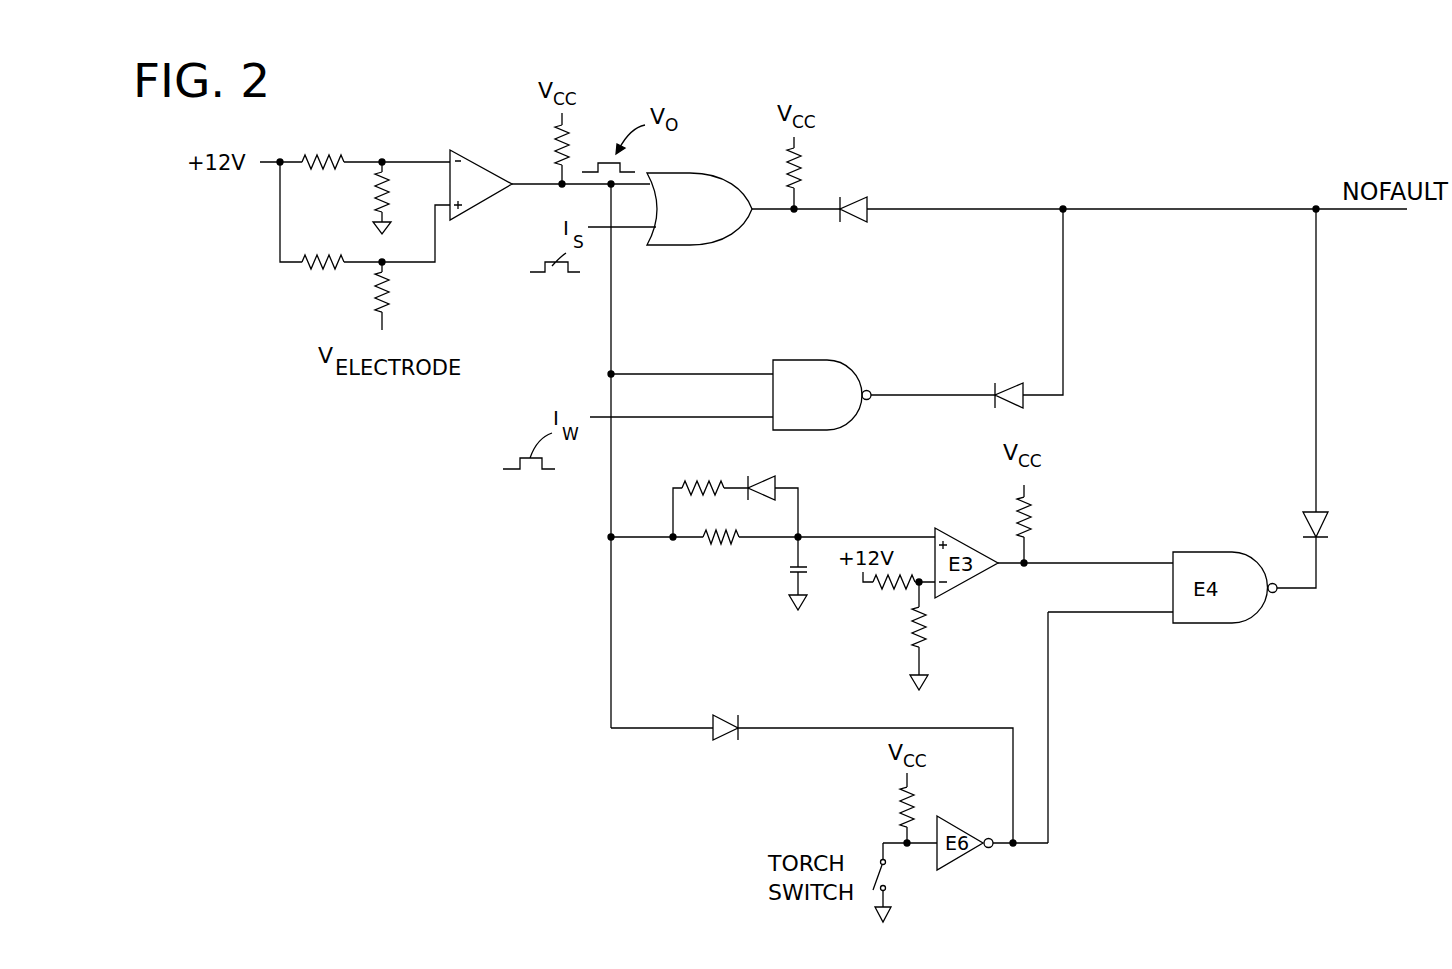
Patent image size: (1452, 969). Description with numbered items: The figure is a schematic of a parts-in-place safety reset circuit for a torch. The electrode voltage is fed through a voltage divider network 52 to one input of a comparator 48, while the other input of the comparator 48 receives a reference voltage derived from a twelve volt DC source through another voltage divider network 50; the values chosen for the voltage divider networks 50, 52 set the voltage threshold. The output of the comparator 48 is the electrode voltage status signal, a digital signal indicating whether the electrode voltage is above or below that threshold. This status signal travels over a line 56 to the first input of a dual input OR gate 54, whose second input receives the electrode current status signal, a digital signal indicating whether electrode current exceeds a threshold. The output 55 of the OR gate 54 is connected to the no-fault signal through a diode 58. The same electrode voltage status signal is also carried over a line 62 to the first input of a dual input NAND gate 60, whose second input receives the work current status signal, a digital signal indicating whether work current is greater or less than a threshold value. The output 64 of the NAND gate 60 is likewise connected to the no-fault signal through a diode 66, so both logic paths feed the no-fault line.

The comparator 48 is at (485, 169).
The voltage divider network 50 is at (385, 154).
The voltage divider network 52 is at (379, 266).
The dual input OR gate 54 is at (735, 189).
The output of OR gate 55 is at (768, 210).
The line 56 is at (525, 188).
The diode 58 is at (866, 195).
The dual input NAND gate 60 is at (858, 378).
The line 62 is at (675, 373).
The output of NAND gate 64 is at (933, 398).
The diode 66 is at (1023, 388).